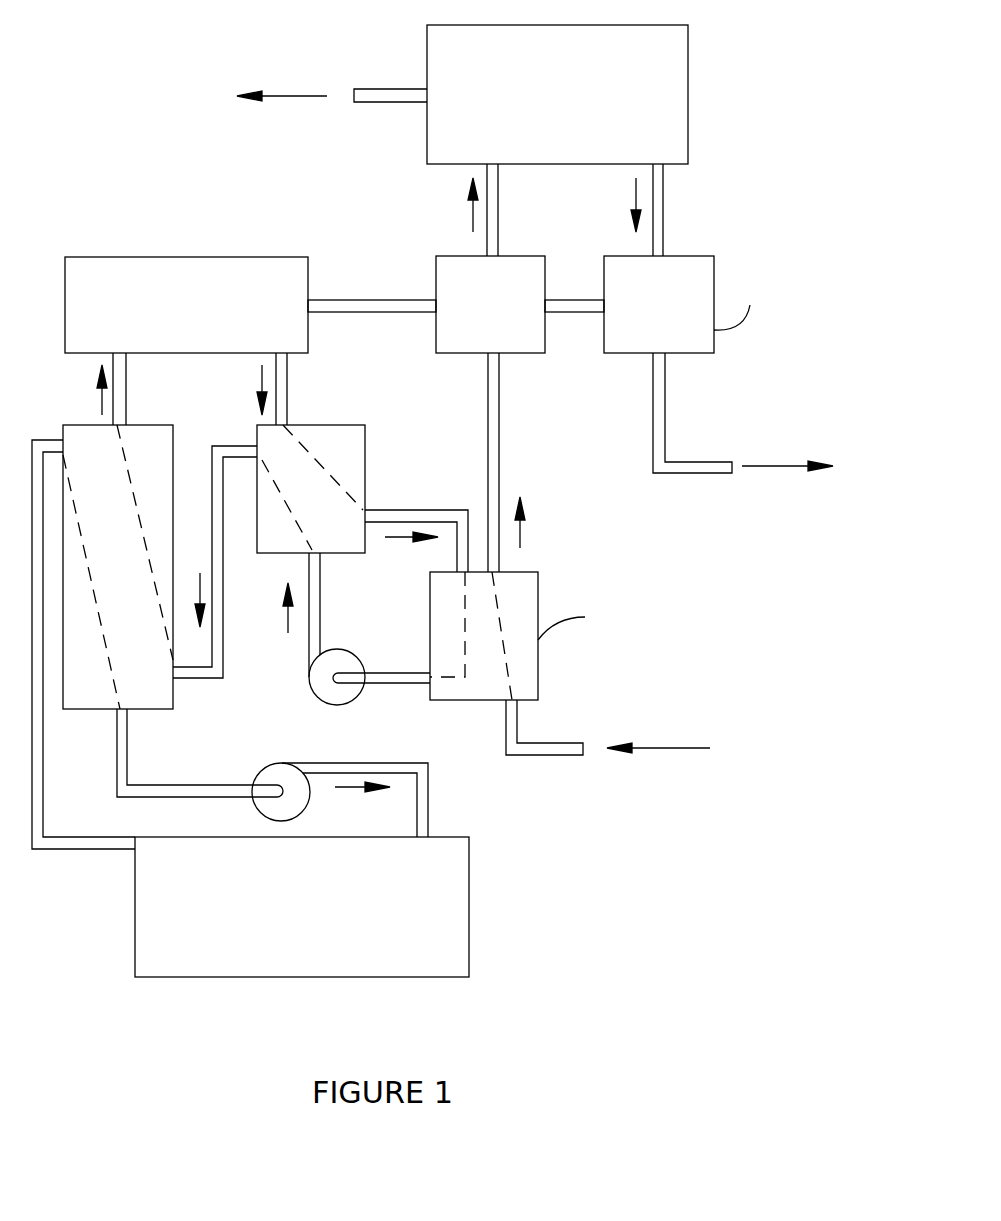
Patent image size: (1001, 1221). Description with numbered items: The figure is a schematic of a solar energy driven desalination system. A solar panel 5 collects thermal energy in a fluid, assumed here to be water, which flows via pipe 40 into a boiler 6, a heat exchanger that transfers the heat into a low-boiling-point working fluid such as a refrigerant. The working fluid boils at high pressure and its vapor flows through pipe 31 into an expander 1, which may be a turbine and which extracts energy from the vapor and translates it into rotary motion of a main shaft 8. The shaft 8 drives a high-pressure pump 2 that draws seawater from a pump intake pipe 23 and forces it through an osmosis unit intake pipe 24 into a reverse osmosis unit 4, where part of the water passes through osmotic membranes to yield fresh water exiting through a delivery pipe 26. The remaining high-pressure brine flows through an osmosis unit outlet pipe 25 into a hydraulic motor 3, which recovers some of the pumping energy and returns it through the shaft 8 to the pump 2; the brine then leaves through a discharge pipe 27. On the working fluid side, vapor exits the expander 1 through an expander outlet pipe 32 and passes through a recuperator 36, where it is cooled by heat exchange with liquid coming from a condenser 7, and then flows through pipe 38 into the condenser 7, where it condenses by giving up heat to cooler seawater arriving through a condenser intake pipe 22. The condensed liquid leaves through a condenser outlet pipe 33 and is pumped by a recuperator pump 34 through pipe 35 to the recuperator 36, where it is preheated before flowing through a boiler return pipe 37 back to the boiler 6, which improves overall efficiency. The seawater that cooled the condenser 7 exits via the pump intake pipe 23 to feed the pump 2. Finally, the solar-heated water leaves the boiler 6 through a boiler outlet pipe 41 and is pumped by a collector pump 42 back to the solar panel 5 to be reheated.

The expander 1 is at (193, 336).
The high-pressure pump 2 is at (483, 334).
The hydraulic motor 3 is at (653, 309).
The reverse osmosis (RO) unit 4 is at (553, 127).
The solar panel 5 is at (281, 942).
The boiler 6 is at (111, 576).
The condenser 7 is at (480, 632).
The main shaft 8 is at (337, 300).
The condenser intake pipe 22 is at (545, 741).
The pump intake pipe 23 is at (499, 437).
The osmosis unit intake pipe 24 is at (498, 228).
The osmosis unit outlet pipe 25 is at (663, 228).
The delivery pipe 26 is at (392, 89).
The discharge pipe 27 is at (665, 440).
The pipe 31 is at (126, 400).
The expander outlet pipe 32 is at (287, 390).
The condenser outlet pipe 33 is at (378, 670).
The recuperator pump 34 is at (322, 704).
The pipe 35 is at (320, 572).
The recuperator 36 is at (323, 506).
The boiler return pipe 37 is at (250, 446).
The pipe 38 is at (410, 510).
The pipe 40 is at (55, 852).
The boiler outlet pipe 41 is at (127, 760).
The collector pump 42 is at (255, 770).